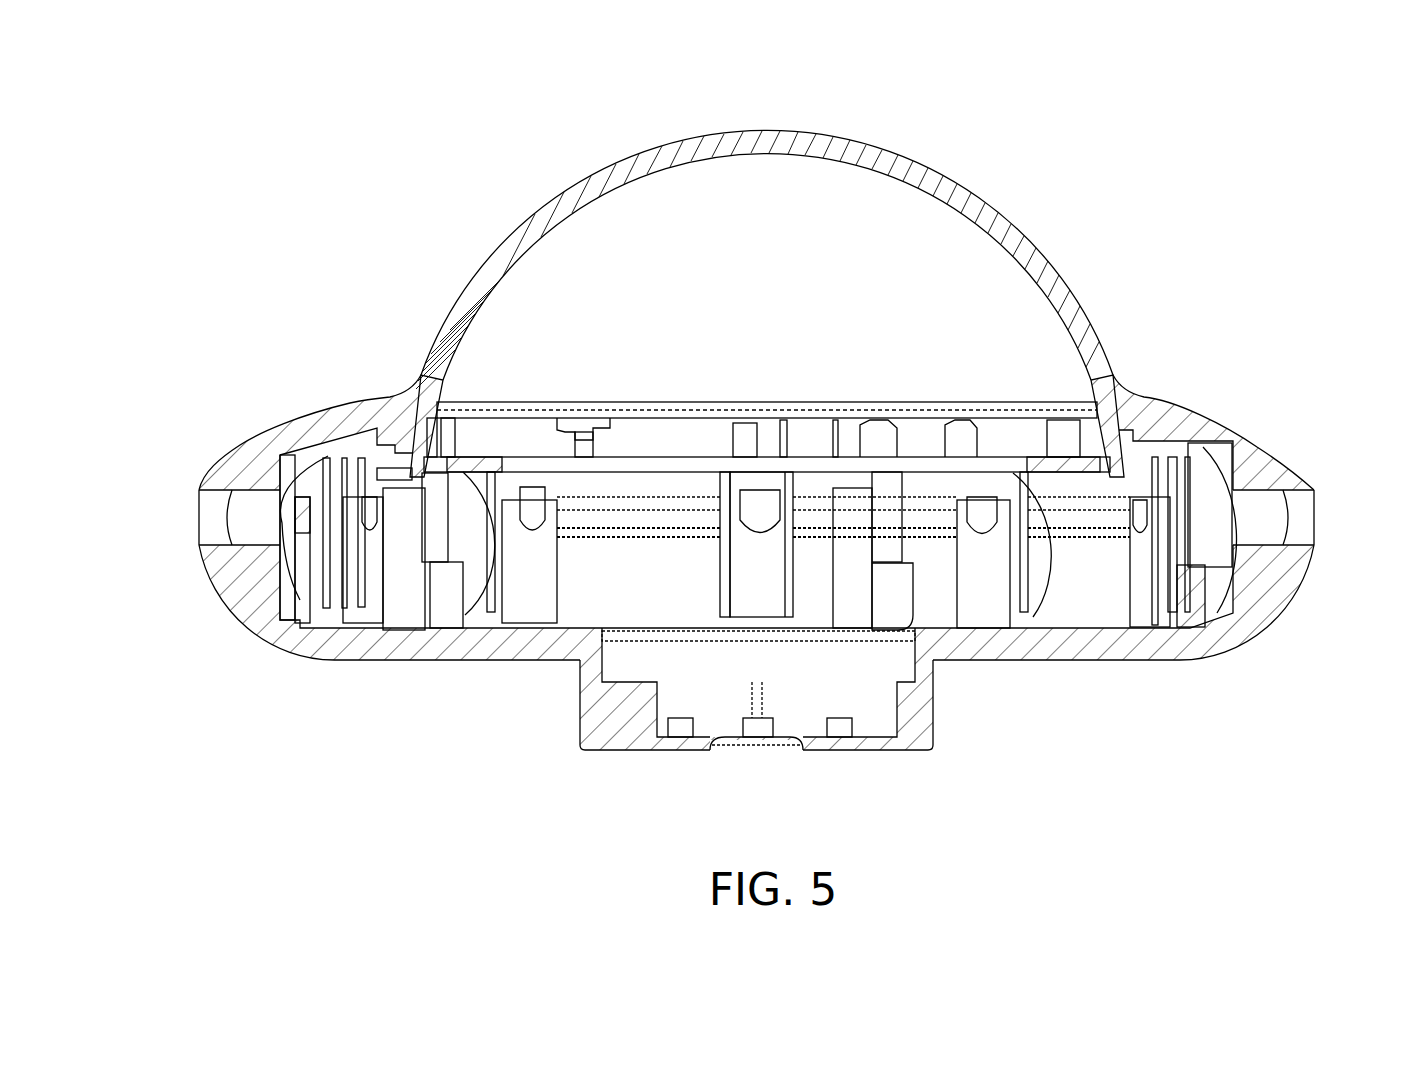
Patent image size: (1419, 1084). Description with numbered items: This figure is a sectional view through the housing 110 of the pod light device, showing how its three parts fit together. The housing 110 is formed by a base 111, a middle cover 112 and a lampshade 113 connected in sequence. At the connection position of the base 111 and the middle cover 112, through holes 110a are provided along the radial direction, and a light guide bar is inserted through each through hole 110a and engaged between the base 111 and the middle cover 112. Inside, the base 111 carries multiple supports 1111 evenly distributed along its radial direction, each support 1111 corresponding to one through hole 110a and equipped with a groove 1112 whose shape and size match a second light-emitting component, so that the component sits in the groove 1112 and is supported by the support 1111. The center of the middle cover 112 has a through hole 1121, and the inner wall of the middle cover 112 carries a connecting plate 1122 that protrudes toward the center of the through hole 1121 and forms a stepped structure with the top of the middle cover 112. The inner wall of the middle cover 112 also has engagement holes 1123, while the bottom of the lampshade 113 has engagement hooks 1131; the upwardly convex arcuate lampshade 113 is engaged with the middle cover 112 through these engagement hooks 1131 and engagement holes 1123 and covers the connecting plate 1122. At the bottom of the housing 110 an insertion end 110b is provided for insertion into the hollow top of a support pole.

The housing 110 is at (137, 164).
The through hole 110a is at (203, 505).
The insertion end 110b is at (625, 715).
The base 111 is at (791, 760).
The middle cover 112 is at (248, 462).
The lampshade 113 is at (928, 185).
The support 1111 is at (370, 585).
The groove 1112 is at (373, 532).
The through hole 1121 is at (928, 460).
The connecting plate 1122 is at (460, 445).
The engagement hole 1123 is at (414, 478).
The engagement hook 1131 is at (378, 450).